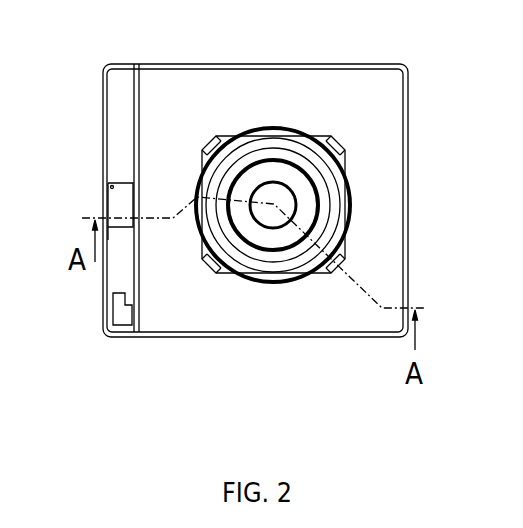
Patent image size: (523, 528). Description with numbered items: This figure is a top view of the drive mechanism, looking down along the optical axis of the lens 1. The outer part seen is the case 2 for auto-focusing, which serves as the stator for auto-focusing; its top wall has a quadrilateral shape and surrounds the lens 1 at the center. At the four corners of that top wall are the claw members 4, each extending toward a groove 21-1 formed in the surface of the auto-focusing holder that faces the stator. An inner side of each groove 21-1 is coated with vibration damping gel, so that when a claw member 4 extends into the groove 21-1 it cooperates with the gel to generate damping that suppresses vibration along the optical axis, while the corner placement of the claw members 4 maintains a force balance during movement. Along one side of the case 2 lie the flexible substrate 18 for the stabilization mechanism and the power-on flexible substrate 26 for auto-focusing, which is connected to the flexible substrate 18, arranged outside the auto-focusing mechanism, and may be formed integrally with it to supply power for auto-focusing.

The lens 1 is at (322, 192).
The case for auto-focusing 2 is at (368, 102).
The claw member 4 is at (199, 140).
The groove 21-1 is at (217, 132).
The flexible substrate for the stabilization mechanism 18 is at (121, 277).
The power-on flexible substrate for auto-focusing 26 is at (123, 312).